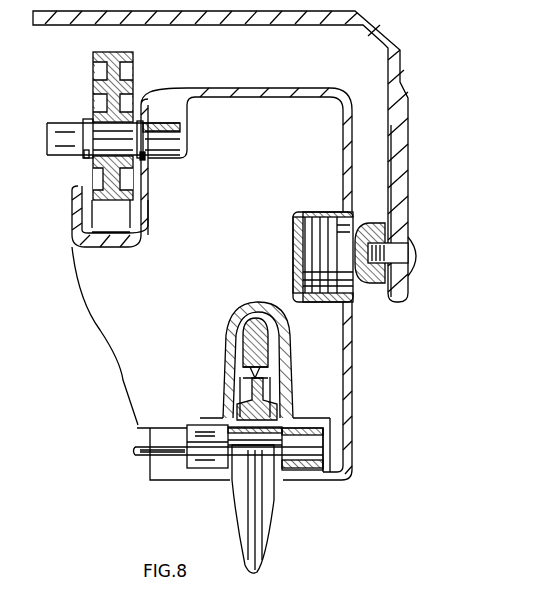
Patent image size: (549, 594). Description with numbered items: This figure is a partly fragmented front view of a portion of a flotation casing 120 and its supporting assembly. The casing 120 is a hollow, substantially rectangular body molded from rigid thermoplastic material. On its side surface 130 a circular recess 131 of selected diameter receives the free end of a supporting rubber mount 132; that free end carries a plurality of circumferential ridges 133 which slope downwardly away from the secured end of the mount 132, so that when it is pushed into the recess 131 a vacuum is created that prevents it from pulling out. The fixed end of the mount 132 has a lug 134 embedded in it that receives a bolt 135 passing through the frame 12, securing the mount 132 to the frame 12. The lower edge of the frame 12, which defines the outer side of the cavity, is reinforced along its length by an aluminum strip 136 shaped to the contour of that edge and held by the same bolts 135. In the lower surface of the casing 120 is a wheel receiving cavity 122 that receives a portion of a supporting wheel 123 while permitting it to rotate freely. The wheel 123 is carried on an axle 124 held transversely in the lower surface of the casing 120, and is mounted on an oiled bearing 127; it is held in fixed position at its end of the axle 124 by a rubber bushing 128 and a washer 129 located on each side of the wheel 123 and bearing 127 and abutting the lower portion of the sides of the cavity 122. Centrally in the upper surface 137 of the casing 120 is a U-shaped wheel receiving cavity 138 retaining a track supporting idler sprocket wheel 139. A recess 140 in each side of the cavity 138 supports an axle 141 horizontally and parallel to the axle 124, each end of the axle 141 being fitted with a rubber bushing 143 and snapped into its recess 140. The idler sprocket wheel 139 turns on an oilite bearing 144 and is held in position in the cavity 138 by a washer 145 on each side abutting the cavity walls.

The frame 12 is at (400, 160).
The flotation casing 120 is at (360, 424).
The wheel receiving cavity 122 is at (288, 341).
The supporting wheel 123 is at (267, 385).
The axle 124 is at (158, 442).
The oiled bearing 127 is at (235, 415).
The rubber bushing 128 is at (307, 428).
The washer 129 is at (282, 470).
The side surface 130 is at (353, 382).
The circular recess 131 is at (300, 293).
The supporting rubber mount 132 is at (347, 285).
The circumferential ridge 133 is at (315, 215).
The lug 134 is at (394, 242).
The bolt 135 is at (403, 257).
The aluminum strip 136 is at (388, 210).
The upper surface 137 is at (274, 87).
The wheel receiving cavity 138 is at (116, 246).
The track supporting idler sprocket wheel 139 is at (97, 75).
The recess 140 is at (171, 92).
The axle 141 is at (187, 137).
The rubber bushing 143 is at (173, 128).
The oilite bearing 144 is at (97, 117).
The washer 145 is at (85, 152).